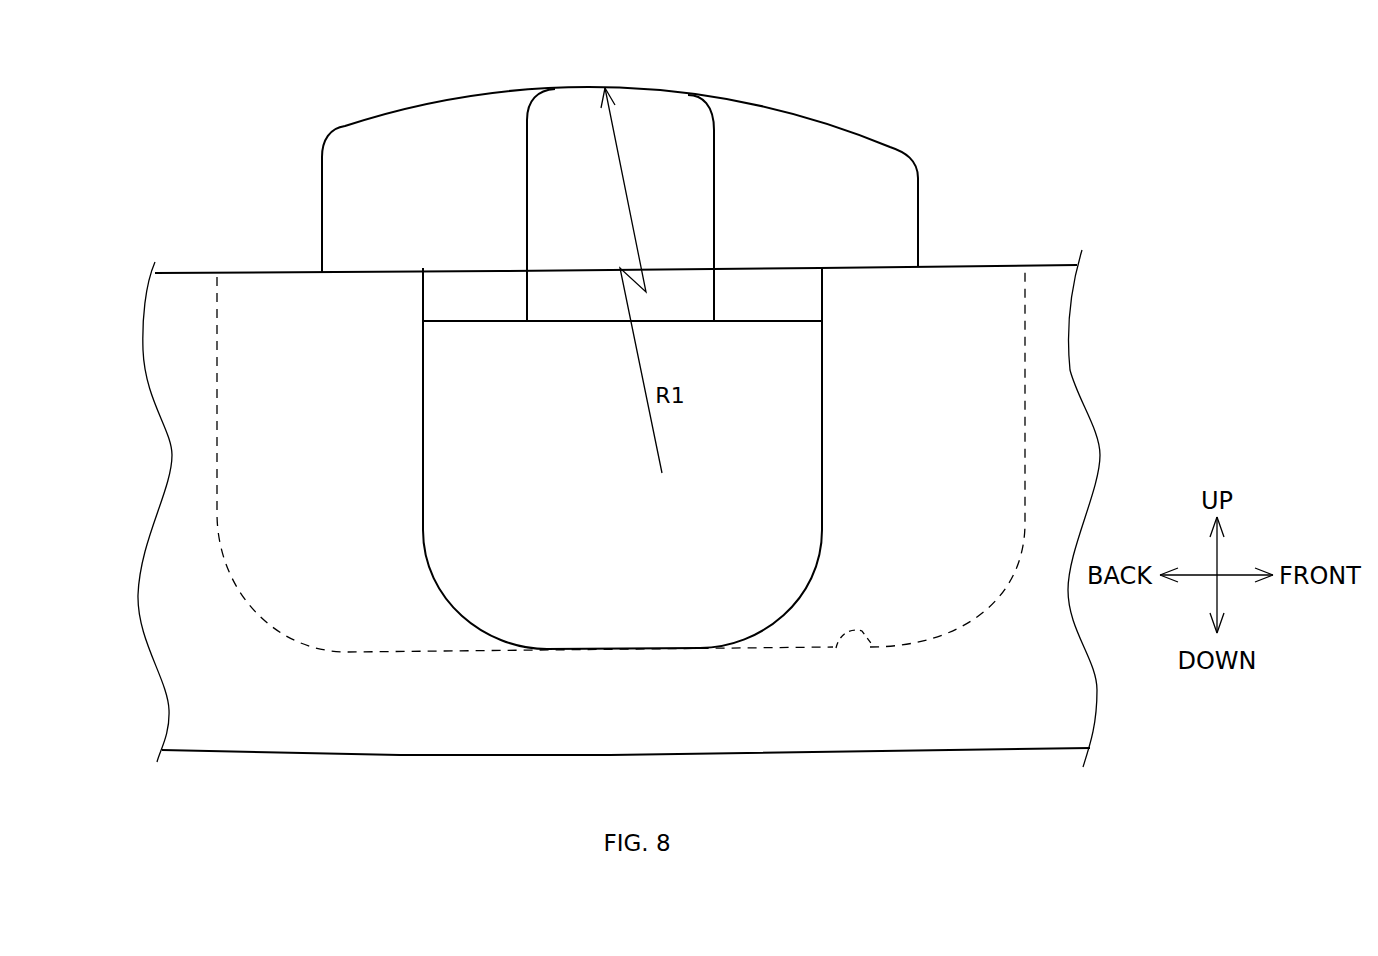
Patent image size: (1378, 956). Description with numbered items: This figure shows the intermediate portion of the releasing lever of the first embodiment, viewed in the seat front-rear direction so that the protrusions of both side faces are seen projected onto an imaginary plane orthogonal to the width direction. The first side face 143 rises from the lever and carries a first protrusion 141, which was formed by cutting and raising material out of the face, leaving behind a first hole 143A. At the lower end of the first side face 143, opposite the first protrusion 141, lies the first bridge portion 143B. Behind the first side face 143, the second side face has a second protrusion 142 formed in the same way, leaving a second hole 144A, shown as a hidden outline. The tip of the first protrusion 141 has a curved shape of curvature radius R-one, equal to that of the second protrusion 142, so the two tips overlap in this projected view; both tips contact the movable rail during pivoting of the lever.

The first protrusion 141 is at (713, 133).
The second protrusion 142 is at (845, 127).
The first side face 143 is at (968, 700).
The first hole 143A is at (662, 585).
The first bridge portion 143B is at (560, 692).
The second hole 144A is at (836, 648).